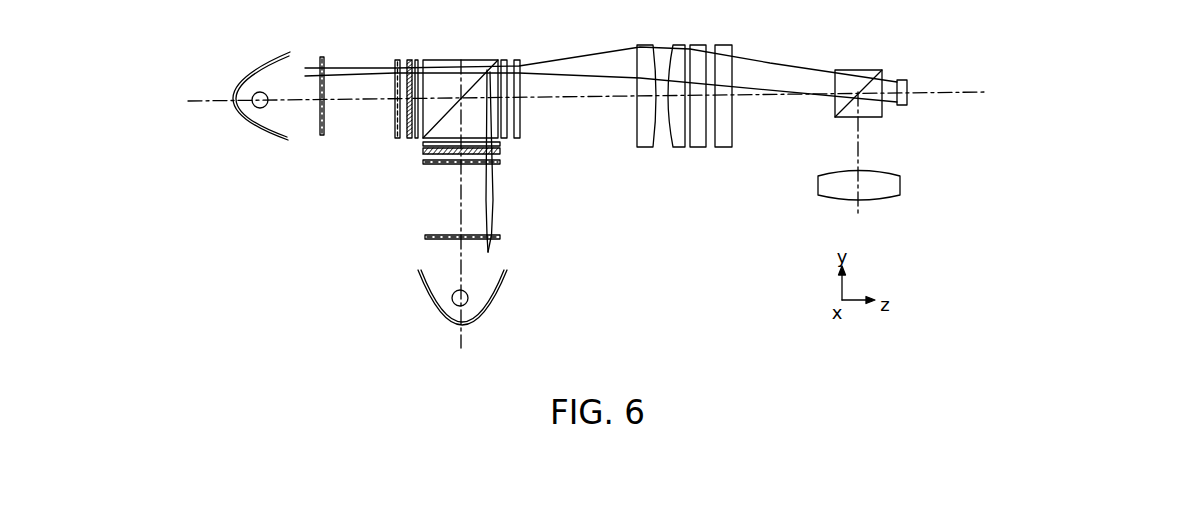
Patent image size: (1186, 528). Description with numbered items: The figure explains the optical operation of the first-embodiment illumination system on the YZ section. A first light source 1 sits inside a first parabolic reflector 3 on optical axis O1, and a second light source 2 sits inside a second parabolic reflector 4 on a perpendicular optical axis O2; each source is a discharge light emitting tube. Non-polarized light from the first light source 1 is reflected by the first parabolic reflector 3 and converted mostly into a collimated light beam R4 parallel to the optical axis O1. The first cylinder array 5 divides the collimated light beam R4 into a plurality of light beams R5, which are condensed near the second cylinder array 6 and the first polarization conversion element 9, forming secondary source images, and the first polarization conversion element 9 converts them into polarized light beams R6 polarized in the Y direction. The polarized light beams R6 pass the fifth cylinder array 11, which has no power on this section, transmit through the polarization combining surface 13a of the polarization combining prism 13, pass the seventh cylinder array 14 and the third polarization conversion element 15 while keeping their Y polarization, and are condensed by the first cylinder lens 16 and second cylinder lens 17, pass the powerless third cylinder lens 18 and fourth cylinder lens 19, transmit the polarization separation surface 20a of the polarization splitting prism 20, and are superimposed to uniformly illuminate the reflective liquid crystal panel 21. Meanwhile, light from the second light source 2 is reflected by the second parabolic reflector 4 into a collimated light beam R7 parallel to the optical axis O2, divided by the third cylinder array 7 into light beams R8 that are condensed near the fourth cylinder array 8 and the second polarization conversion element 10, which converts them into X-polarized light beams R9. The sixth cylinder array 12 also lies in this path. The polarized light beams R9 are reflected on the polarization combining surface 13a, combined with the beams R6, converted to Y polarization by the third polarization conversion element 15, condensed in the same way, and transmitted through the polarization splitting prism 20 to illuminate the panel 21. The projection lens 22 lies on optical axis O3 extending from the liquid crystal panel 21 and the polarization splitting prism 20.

The first light source 1 is at (258, 110).
The second light source 2 is at (468, 298).
The first parabolic reflector 3 is at (287, 142).
The second parabolic reflector 4 is at (511, 275).
The first cylinder array 5 is at (322, 57).
The second cylinder array 6 is at (397, 60).
The third cylinder array 7 is at (502, 237).
The fourth cylinder array 8 is at (498, 165).
The first polarization conversion element 9 is at (407, 60).
The second polarization conversion element 10 is at (503, 152).
The fifth cylinder array 11 is at (416, 60).
The sixth cylinder array 12 is at (500, 145).
The polarization combining prism 13 is at (430, 60).
The polarization combining surface 13a is at (483, 61).
The seventh cylinder array 14 is at (505, 60).
The third polarization conversion element 15 is at (517, 60).
The first cylinder lens 16 is at (641, 148).
The second cylinder lens 17 is at (677, 148).
The third cylinder lens 18 is at (701, 148).
The fourth cylinder lens 19 is at (726, 148).
The polarization splitting prism 20 is at (842, 70).
The polarization separation surface 20a is at (872, 79).
The reflective liquid crystal panel 21 is at (901, 80).
The projection lens 22 is at (900, 185).
The collimated light beam R4 is at (313, 67).
The light beams R5 is at (356, 67).
The polarized light beams R6 is at (464, 68).
The collimated light beam R7 is at (490, 247).
The light beams R8 is at (492, 208).
The polarized light beams R9 is at (493, 117).
The optical axis O1 is at (211, 100).
The optical axis O2 is at (462, 263).
The optical axis O3 is at (860, 150).